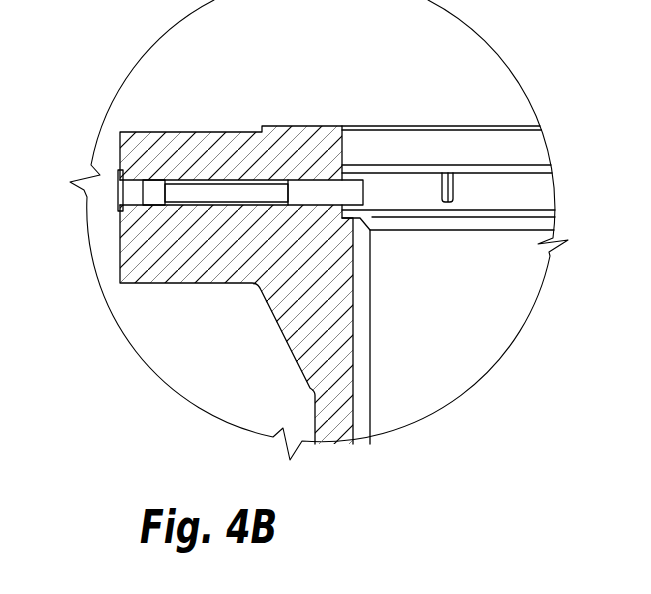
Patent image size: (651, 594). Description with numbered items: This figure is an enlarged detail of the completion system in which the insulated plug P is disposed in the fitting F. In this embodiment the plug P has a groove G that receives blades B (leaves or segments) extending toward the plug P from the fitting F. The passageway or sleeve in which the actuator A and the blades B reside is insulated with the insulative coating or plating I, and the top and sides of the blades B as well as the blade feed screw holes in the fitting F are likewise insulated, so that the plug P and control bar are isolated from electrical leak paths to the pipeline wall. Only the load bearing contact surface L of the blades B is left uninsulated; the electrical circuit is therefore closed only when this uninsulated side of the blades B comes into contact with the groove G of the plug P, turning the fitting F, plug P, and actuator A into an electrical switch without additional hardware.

The fitting F is at (157, 132).
The actuator A is at (132, 192).
The blades B is at (213, 180).
The groove G is at (363, 190).
The insulative coating or plating I is at (478, 164).
The load bearing contact surface L is at (350, 170).
The completion plug P is at (445, 232).